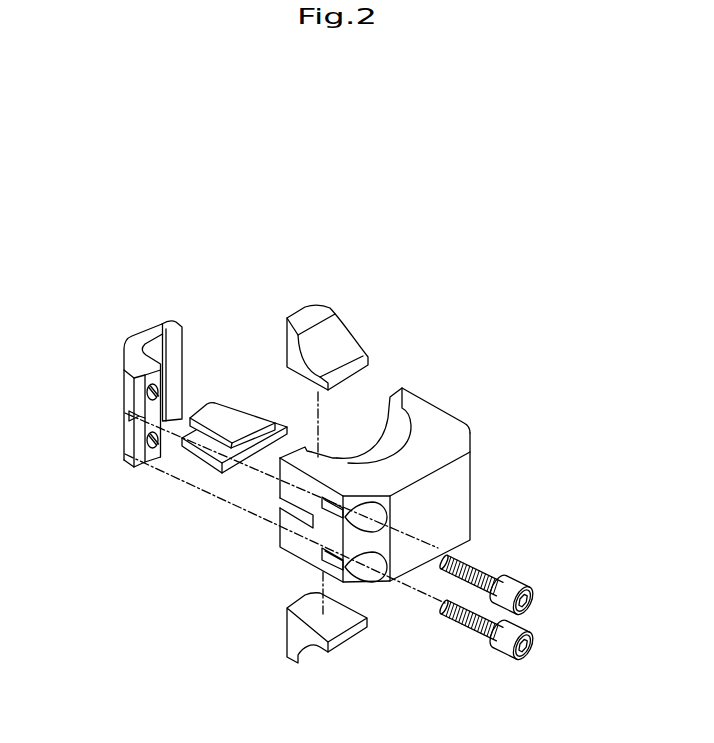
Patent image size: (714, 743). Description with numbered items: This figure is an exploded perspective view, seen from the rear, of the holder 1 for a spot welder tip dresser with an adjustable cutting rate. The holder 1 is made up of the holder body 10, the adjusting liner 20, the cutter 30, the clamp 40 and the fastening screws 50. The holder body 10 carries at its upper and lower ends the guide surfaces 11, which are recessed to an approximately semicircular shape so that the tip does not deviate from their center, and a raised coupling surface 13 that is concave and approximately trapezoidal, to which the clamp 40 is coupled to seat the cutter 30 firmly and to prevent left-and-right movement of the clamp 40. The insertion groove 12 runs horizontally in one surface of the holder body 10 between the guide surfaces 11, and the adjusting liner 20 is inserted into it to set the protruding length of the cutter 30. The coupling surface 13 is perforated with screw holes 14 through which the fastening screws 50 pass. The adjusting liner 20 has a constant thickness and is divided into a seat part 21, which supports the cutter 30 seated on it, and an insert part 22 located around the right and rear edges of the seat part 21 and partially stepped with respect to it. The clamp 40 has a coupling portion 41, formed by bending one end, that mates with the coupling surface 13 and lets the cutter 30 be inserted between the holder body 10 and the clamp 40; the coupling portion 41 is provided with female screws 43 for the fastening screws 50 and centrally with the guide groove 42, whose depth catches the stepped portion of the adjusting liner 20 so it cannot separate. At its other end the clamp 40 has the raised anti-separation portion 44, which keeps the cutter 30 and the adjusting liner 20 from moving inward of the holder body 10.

The holder 1 is at (196, 172).
The holder body 10 is at (478, 501).
The guide surface 11 is at (405, 438).
The insertion groove 12 is at (302, 520).
The coupling surface 13 is at (291, 450).
The screw hole 14 is at (365, 573).
The adjusting liner 20 is at (231, 490).
The seat part 21 is at (227, 408).
The insert part 22 is at (212, 445).
The cutter 30 is at (318, 312).
The clamp 40 is at (137, 320).
The coupling portion 41 is at (129, 458).
The guide groove 42 is at (131, 417).
The female screw 43 is at (157, 448).
The anti-separation portion 44 is at (175, 330).
The fastening screw 50 is at (540, 652).